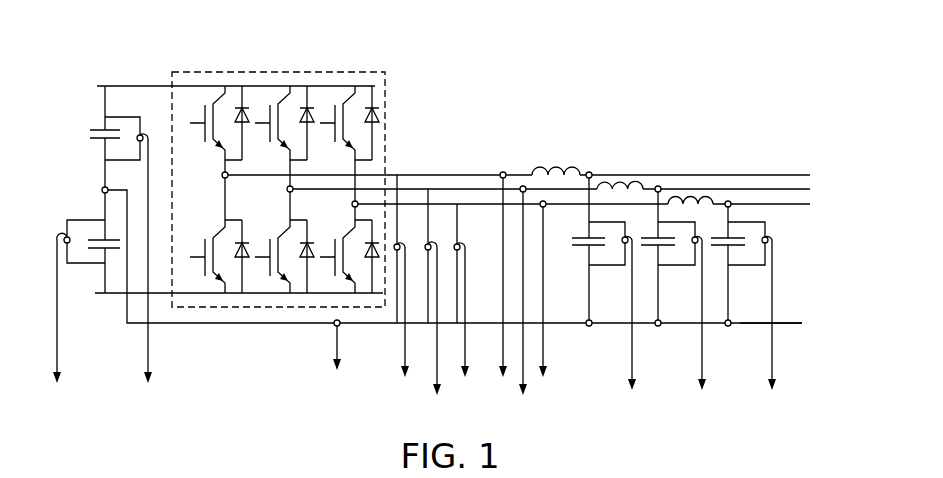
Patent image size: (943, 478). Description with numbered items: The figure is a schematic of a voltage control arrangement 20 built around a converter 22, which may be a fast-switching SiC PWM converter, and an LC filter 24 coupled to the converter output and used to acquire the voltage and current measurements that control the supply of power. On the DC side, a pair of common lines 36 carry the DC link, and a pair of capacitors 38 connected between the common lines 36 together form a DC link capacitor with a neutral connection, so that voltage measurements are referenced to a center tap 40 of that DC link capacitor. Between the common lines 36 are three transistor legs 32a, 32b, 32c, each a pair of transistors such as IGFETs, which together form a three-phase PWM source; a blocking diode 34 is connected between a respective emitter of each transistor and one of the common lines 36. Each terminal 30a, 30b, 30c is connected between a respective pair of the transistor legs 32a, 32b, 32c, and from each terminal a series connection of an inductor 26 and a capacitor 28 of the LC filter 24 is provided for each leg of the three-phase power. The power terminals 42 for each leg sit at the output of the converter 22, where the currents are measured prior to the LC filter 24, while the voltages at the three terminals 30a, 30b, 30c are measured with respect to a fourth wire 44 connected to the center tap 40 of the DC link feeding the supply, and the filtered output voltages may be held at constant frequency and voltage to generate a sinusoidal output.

The voltage control arrangement 20 is at (512, 70).
The converter 22 is at (358, 71).
The LC filter 24 is at (676, 125).
The inductor 26 is at (553, 171).
The capacitor 28 is at (600, 250).
The terminal 30a is at (222, 172).
The terminal 30b is at (295, 186).
The terminal 30c is at (358, 202).
The transistor leg 32a is at (216, 102).
The transistor leg 32b is at (282, 102).
The transistor leg 32c is at (347, 102).
The blocking diode 34 is at (241, 97).
The common lines 36 is at (113, 84).
The capacitors 38 is at (102, 128).
The center tap 40 is at (100, 189).
The power terminals 42 is at (460, 243).
The fourth wire 44 is at (788, 326).